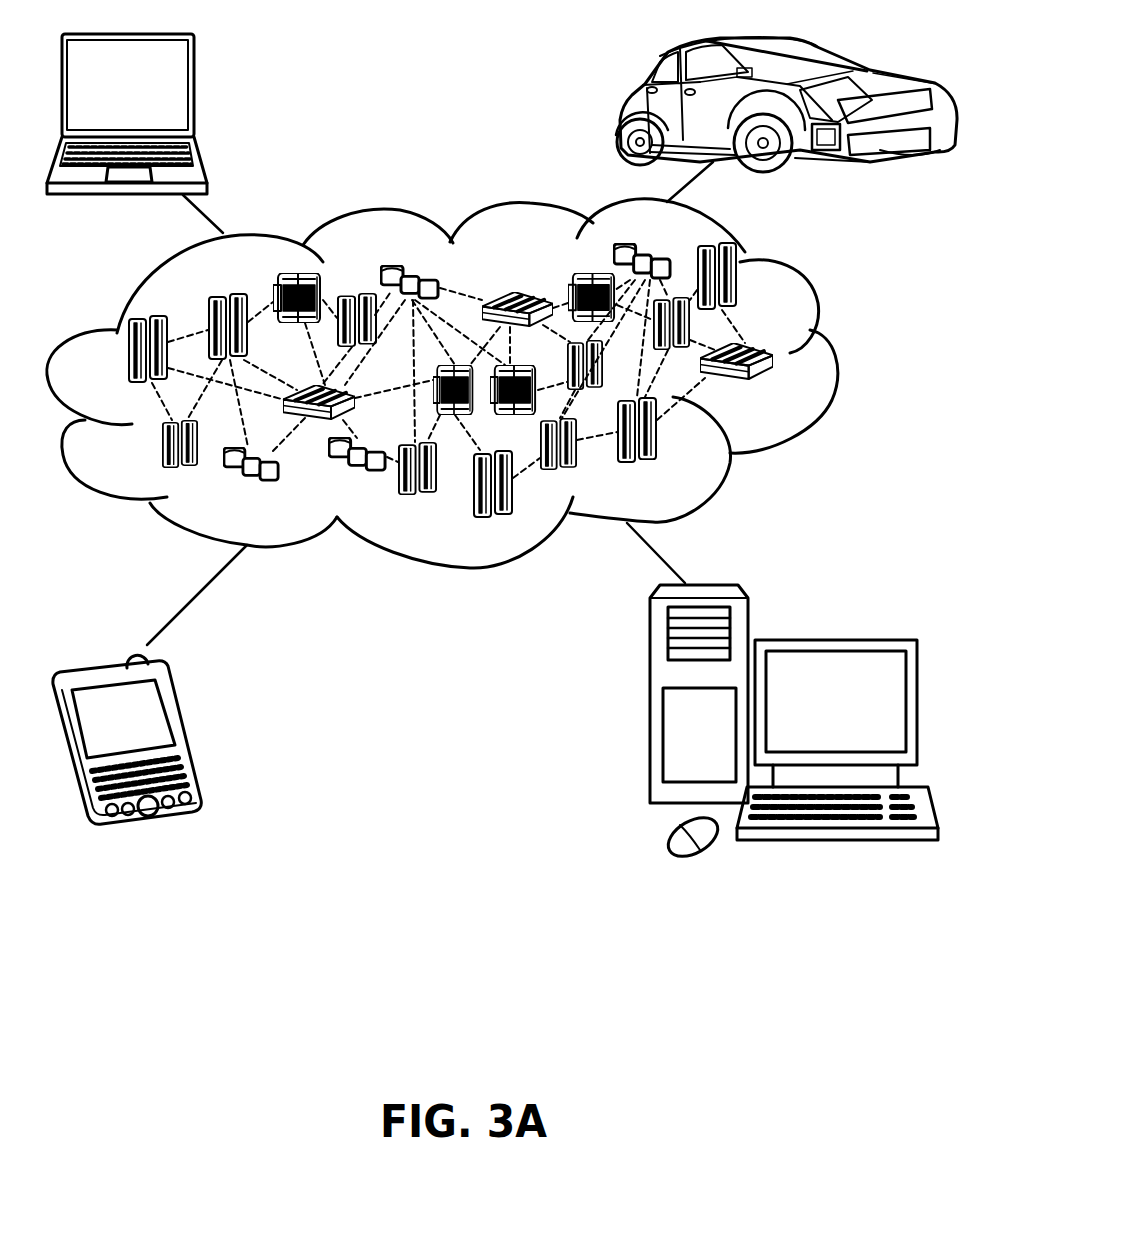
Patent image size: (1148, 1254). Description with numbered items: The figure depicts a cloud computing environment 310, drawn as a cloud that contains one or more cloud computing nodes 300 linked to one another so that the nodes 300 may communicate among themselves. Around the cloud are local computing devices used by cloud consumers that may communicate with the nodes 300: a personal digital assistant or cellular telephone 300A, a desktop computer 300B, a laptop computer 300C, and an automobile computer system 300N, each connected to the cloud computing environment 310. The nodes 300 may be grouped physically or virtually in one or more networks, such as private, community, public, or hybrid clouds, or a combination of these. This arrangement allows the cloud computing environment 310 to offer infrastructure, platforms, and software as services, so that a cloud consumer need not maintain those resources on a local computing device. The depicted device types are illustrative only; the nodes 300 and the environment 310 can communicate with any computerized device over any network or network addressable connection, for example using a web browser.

The cloud computing nodes 300 is at (788, 391).
The cloud computing environment 310 is at (833, 361).
The personal digital assistant (PDA) or cellular telephone 300A is at (183, 730).
The desktop computer 300B is at (832, 640).
The laptop computer 300C is at (194, 95).
The automobile computer system 300N is at (620, 109).